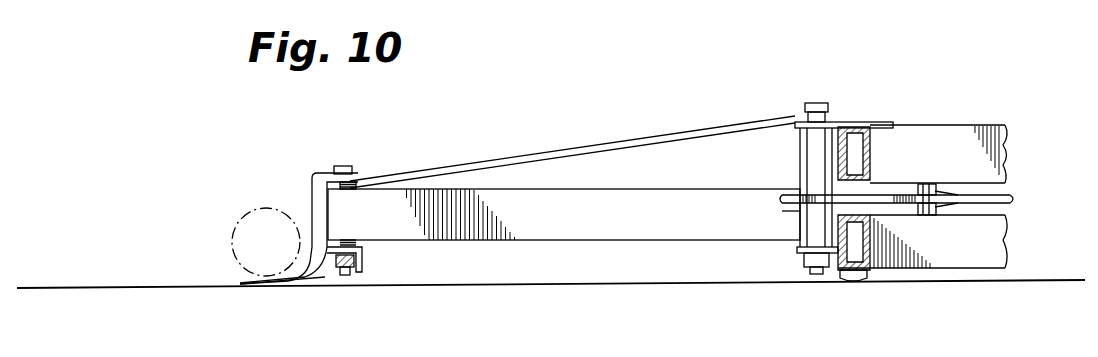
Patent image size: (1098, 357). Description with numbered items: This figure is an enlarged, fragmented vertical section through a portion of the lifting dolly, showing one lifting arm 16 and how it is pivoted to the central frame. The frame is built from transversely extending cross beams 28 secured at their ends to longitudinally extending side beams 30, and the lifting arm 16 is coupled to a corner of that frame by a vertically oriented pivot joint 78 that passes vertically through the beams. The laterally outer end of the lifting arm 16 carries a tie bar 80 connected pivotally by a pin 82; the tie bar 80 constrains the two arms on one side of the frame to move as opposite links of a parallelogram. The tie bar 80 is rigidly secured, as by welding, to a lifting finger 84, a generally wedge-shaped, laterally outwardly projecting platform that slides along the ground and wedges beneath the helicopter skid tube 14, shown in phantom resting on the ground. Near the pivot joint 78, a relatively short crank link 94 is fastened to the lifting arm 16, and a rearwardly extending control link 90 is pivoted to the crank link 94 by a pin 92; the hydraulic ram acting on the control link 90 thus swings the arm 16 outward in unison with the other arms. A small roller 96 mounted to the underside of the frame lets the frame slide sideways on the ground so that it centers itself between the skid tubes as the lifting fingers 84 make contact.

The skid tube 14 is at (246, 215).
The lifting arm 16 is at (571, 235).
The cross beam 28 is at (986, 133).
The side beam 30 is at (870, 142).
The pivot joint 78 is at (817, 104).
The tie bar 80 is at (358, 262).
The pin 82 is at (345, 166).
The lifting finger 84 is at (276, 278).
The control link 90 is at (1015, 193).
The pin 92 is at (926, 184).
The crank link 94 is at (916, 210).
The roller 96 is at (857, 280).